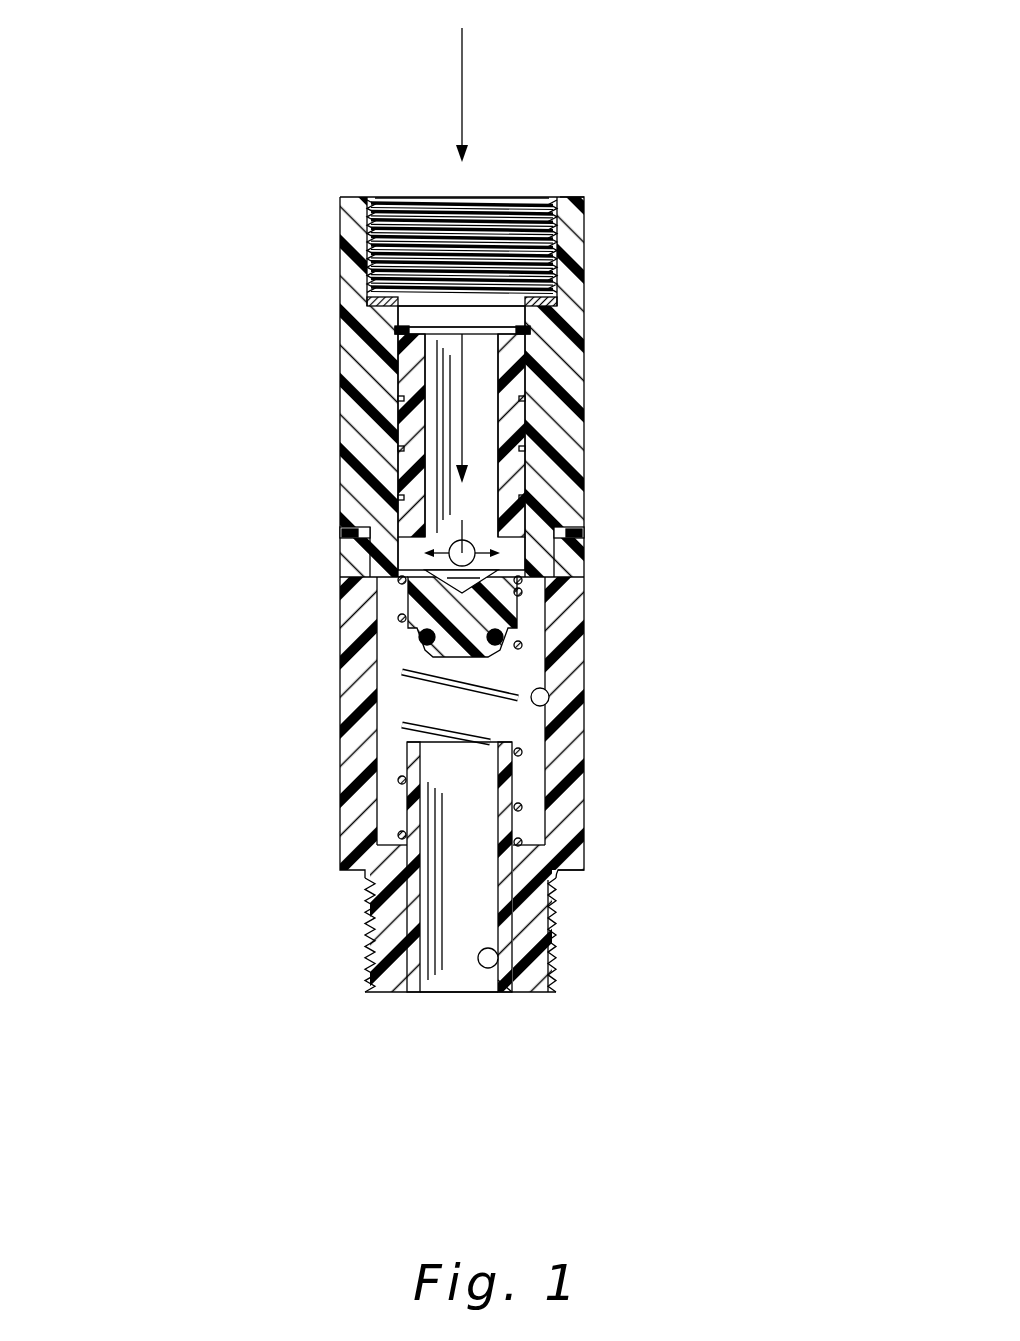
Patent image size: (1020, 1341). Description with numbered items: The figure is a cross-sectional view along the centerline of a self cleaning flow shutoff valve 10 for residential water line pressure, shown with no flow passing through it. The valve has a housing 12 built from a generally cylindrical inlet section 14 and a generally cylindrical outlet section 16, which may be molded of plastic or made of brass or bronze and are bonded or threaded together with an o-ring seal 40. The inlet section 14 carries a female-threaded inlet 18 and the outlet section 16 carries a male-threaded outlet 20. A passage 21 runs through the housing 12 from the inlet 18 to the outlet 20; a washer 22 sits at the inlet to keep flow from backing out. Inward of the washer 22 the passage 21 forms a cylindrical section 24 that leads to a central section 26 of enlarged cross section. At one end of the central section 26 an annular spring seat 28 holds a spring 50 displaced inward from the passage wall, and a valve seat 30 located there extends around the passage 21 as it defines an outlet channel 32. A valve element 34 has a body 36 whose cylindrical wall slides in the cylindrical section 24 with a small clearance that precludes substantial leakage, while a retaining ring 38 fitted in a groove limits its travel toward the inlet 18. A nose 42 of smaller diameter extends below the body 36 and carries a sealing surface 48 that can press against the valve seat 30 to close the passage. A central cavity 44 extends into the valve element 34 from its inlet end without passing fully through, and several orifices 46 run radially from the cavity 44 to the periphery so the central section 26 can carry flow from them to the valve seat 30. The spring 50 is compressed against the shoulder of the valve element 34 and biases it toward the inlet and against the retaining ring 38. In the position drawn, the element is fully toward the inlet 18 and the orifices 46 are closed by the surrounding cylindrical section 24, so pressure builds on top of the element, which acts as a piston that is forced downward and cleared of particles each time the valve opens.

The flow shutoff valve 10 is at (336, 184).
The housing 12 is at (585, 197).
The inlet section 14 is at (567, 360).
The outlet section 16 is at (567, 816).
The inlet 18 is at (525, 197).
The outlet 20 is at (466, 985).
The passage 21 is at (488, 308).
The washer 22 is at (365, 303).
The cylindrical section 24 is at (436, 197).
The central section 26 is at (549, 700).
The annular spring seat 28 is at (547, 843).
The valve seat 30 is at (505, 728).
The outlet channel 32 is at (508, 992).
The valve element 34 is at (493, 330).
The body 36 is at (512, 432).
The retaining ring 38 is at (398, 330).
The o-ring seal 40 is at (340, 516).
The nose 42 is at (415, 635).
The central cavity 44 is at (488, 493).
The orifices 46 is at (428, 556).
The sealing surface 48 is at (400, 668).
The spring 50 is at (500, 644).